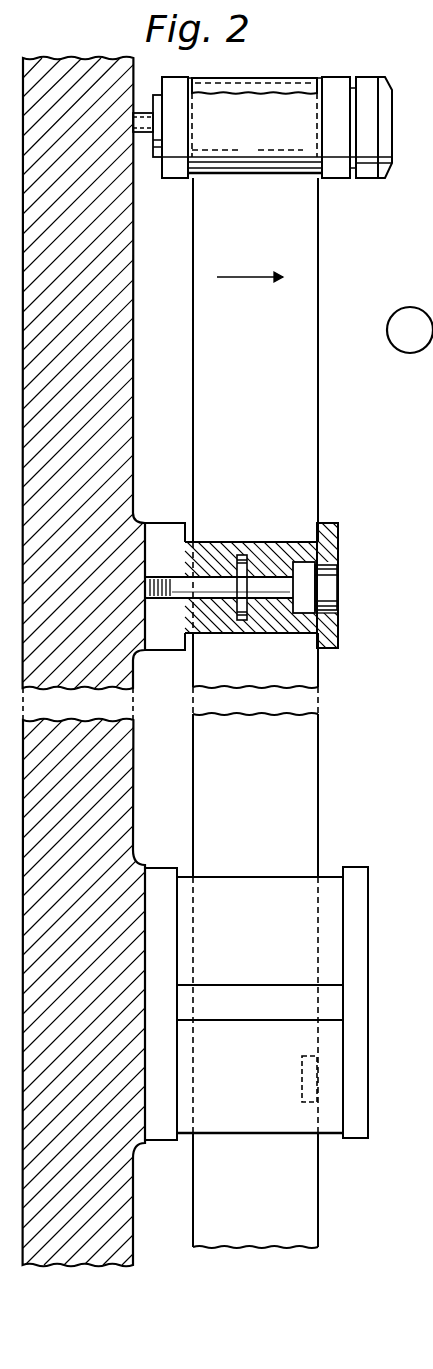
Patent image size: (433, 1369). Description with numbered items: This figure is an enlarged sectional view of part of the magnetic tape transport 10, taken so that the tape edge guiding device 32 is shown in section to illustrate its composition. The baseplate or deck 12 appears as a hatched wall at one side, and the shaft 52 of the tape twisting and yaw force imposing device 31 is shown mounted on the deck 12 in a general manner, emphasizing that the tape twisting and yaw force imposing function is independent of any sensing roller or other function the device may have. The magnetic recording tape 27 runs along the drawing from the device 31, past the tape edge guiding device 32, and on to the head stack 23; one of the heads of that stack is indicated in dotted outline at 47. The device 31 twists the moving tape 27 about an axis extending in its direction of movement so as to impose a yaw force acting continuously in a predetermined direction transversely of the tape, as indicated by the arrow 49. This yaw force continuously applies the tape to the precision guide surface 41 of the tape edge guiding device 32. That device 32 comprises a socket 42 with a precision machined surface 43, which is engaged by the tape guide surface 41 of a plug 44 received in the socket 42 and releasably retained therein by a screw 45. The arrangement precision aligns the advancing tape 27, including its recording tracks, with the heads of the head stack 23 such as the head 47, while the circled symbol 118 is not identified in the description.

The magnetic tape transport 10 is at (88, 1265).
The baseplate or deck 12 is at (78, 58).
The head stack 23 is at (368, 892).
The magnetic recording tape 27 is at (300, 78).
The tape twisting and yaw force imposing device 31 is at (333, 77).
The tape edge guiding device 32 is at (218, 637).
The precision guide surface 41 is at (312, 648).
The socket 42 is at (267, 636).
The precision machined surface 43 is at (338, 623).
The plug 44 is at (338, 548).
The screw 45 is at (315, 593).
The head 47 is at (318, 1072).
The arrow 49 is at (258, 276).
The shaft 52 is at (143, 133).
The pressure source P 118 is at (413, 307).